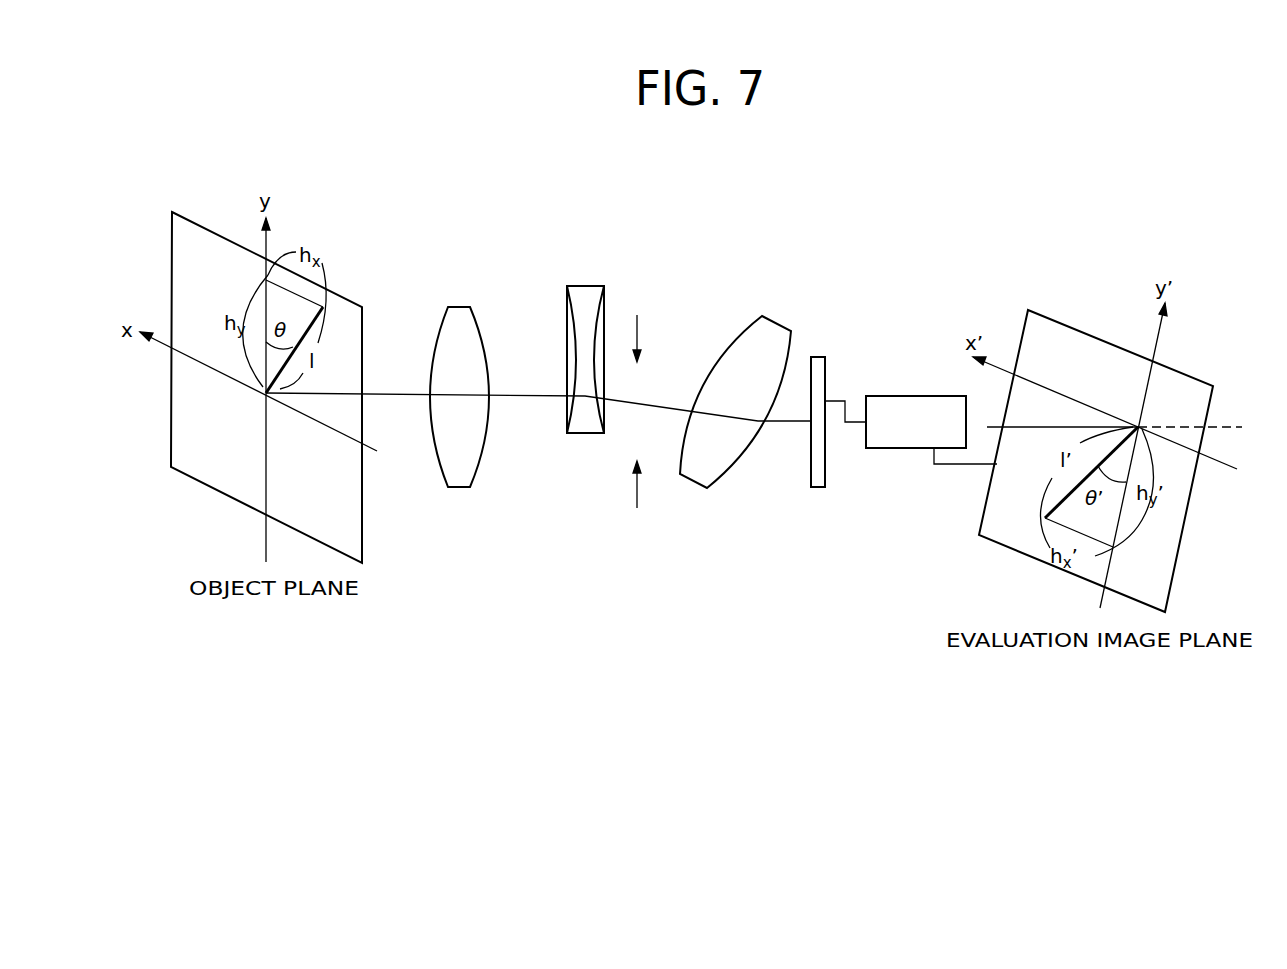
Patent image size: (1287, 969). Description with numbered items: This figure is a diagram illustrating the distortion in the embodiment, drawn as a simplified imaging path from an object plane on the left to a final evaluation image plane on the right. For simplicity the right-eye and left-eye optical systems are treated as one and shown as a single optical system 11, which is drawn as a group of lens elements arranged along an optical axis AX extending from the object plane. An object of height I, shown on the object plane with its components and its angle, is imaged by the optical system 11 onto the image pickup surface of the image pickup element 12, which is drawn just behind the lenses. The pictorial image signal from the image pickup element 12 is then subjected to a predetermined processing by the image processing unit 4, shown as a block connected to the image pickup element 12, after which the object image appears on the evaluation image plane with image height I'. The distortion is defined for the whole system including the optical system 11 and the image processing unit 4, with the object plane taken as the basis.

The optical axis AX is at (403, 393).
The optical system 11 is at (753, 527).
The image pickup element 12 is at (818, 487).
The image processing unit 4 is at (900, 448).